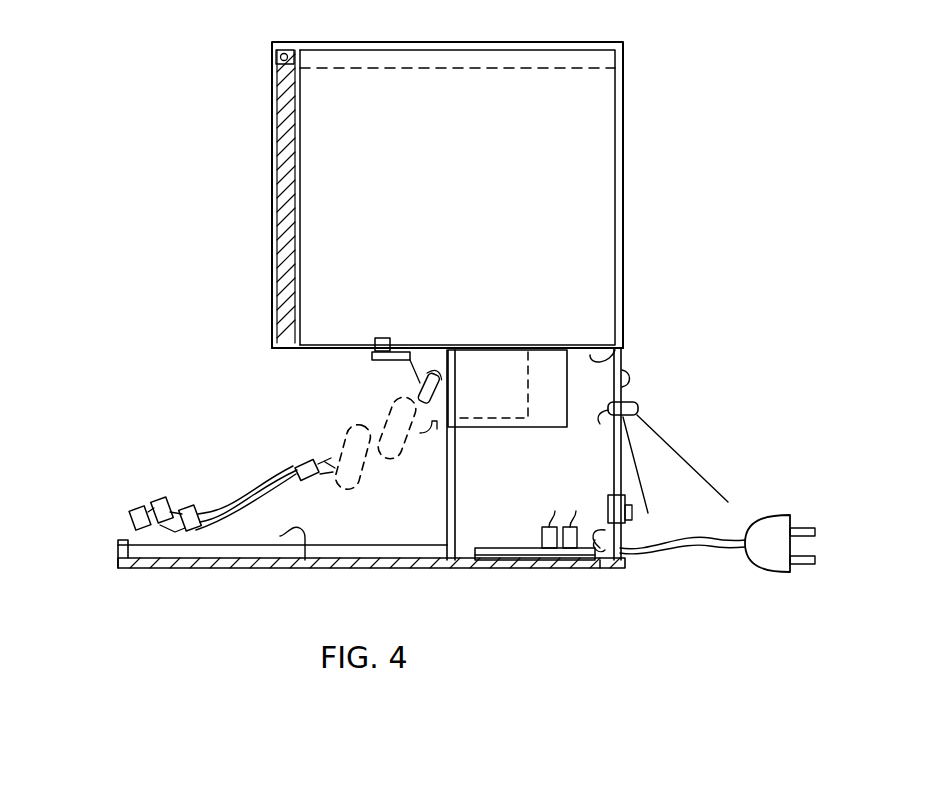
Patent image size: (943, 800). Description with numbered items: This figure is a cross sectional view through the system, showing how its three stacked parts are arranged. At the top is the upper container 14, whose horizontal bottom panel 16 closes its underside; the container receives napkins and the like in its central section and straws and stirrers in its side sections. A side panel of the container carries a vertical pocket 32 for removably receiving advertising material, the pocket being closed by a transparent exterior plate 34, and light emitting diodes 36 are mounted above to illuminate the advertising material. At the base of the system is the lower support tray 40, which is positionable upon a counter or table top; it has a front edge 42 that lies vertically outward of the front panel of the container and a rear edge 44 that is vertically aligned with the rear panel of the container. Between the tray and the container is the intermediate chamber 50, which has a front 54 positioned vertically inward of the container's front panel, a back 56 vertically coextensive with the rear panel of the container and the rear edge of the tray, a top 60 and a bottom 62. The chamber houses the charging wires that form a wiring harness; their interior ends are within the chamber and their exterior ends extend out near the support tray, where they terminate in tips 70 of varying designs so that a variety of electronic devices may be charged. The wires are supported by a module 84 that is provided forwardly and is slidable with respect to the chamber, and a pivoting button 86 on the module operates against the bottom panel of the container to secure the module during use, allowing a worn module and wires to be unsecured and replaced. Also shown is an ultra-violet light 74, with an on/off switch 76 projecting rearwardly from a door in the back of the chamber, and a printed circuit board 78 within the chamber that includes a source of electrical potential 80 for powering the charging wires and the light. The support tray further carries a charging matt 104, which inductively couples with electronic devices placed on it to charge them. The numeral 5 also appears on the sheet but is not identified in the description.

The cross-reference 5 is at (649, 9).
The upper container 14 is at (623, 230).
The horizontal bottom panel 16 is at (318, 348).
The vertical pocket 32 is at (302, 80).
The transparent exterior plate 34 is at (287, 113).
The light emitting diodes 36 is at (282, 62).
The lower support tray 40 is at (237, 565).
The front edge 42 is at (115, 552).
The rear edge 44 is at (675, 476).
The intermediate chamber 50 is at (560, 489).
The front 54 is at (447, 490).
The back 56 is at (623, 557).
The top 60 is at (615, 350).
The bottom 62 is at (598, 570).
The tips 70 is at (138, 510).
The ultra-violet light 74 is at (638, 407).
The on/off switch 76 is at (663, 548).
The printed circuit board 78 is at (522, 547).
The source of electrical potential 80 is at (777, 522).
The module 84 is at (495, 385).
The pivoting button 86 is at (380, 338).
The charging matt 104 is at (305, 560).